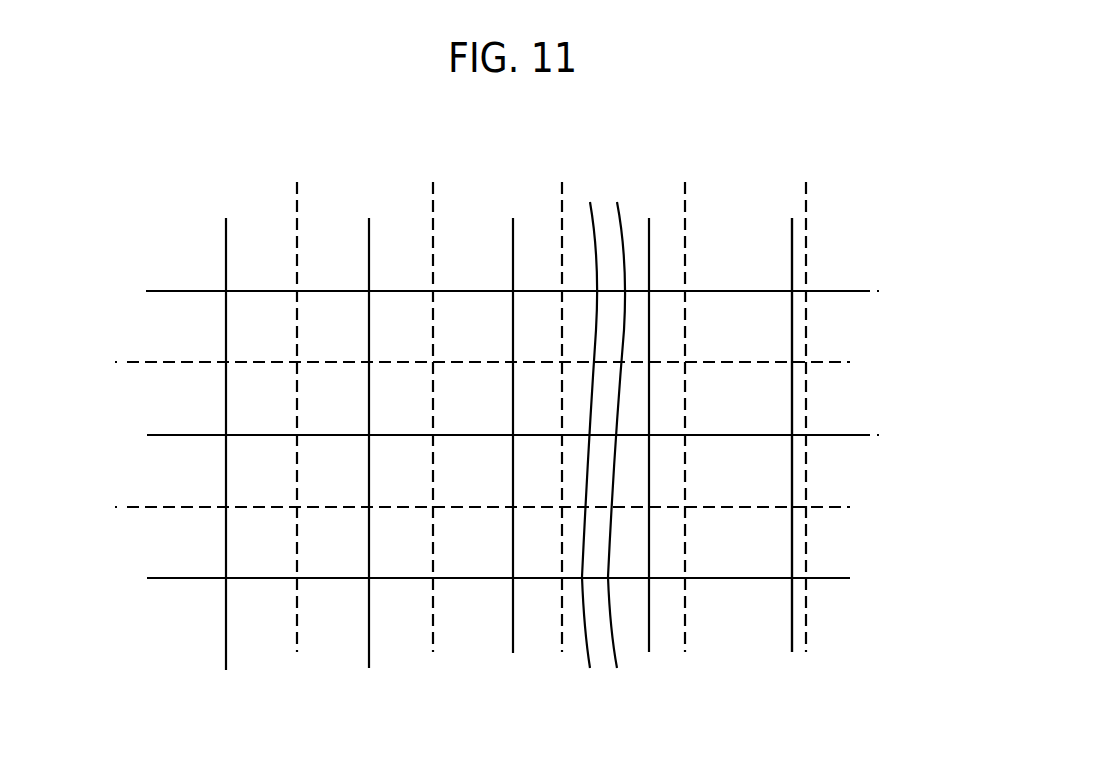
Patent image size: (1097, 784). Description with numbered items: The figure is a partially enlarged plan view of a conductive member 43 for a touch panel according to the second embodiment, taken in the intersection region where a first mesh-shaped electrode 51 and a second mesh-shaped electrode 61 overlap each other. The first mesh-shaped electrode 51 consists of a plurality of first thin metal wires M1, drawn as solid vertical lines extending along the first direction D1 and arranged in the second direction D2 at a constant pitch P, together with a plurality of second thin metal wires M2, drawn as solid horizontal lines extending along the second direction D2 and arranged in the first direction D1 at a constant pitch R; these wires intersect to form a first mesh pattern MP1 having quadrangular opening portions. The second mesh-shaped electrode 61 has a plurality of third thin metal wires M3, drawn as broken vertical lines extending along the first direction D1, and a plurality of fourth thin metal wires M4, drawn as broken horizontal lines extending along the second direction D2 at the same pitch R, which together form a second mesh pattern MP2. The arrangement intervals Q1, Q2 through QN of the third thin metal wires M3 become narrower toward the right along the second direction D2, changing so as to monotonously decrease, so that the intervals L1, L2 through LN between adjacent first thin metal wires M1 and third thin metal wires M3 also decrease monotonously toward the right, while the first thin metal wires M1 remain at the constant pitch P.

The conductive member for a touch panel 43 is at (838, 132).
The first mesh-shaped electrode 51 is at (795, 277).
The second mesh-shaped electrode 61 is at (807, 230).
The first thin metal wires M1 is at (225, 247).
The second thin metal wires M2 is at (178, 288).
The third thin metal wires M3 is at (297, 247).
The fourth thin metal wires M4 is at (178, 360).
The first mesh pattern MP1 is at (165, 580).
The second mesh pattern MP2 is at (165, 512).
The arrangement interval Q1 is at (425, 195).
The arrangement interval Q2 is at (554, 195).
The arrangement interval QN is at (798, 194).
The interval L1 is at (289, 635).
The interval L2 is at (425, 634).
The interval LN is at (677, 634).
The pitch P is at (369, 677).
The first direction D1 is at (892, 461).
The second direction D2 is at (715, 699).
The pitch R is at (132, 370).